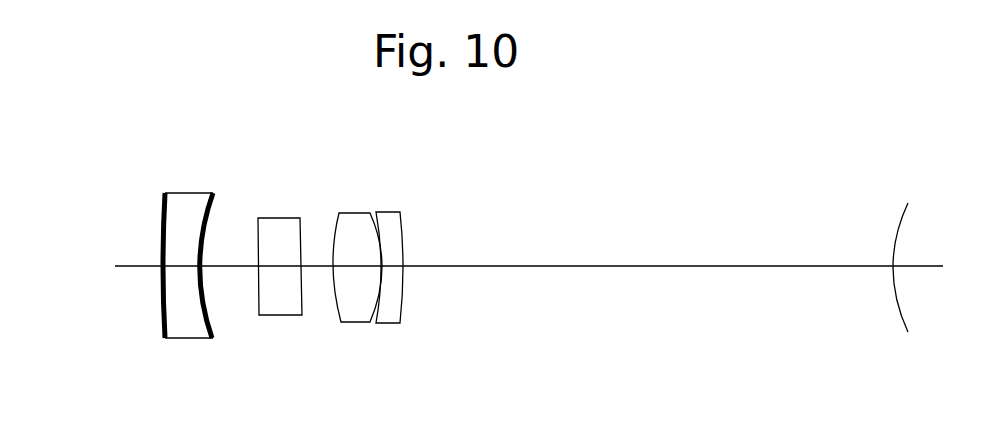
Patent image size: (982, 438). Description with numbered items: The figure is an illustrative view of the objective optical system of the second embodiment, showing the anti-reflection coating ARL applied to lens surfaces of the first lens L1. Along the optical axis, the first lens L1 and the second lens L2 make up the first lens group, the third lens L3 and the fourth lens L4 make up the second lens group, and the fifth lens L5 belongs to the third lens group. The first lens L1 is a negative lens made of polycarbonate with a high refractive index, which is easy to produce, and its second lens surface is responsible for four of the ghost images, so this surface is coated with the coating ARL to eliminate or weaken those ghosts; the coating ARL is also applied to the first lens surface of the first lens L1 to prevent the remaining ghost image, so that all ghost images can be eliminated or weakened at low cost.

The first lens L1 is at (185, 295).
The second lens L2 is at (291, 307).
The third lens L3 is at (360, 313).
The fourth lens L4 is at (398, 303).
The fifth lens L5 is at (905, 300).
The anti-reflection layer ARL is at (235, 365).